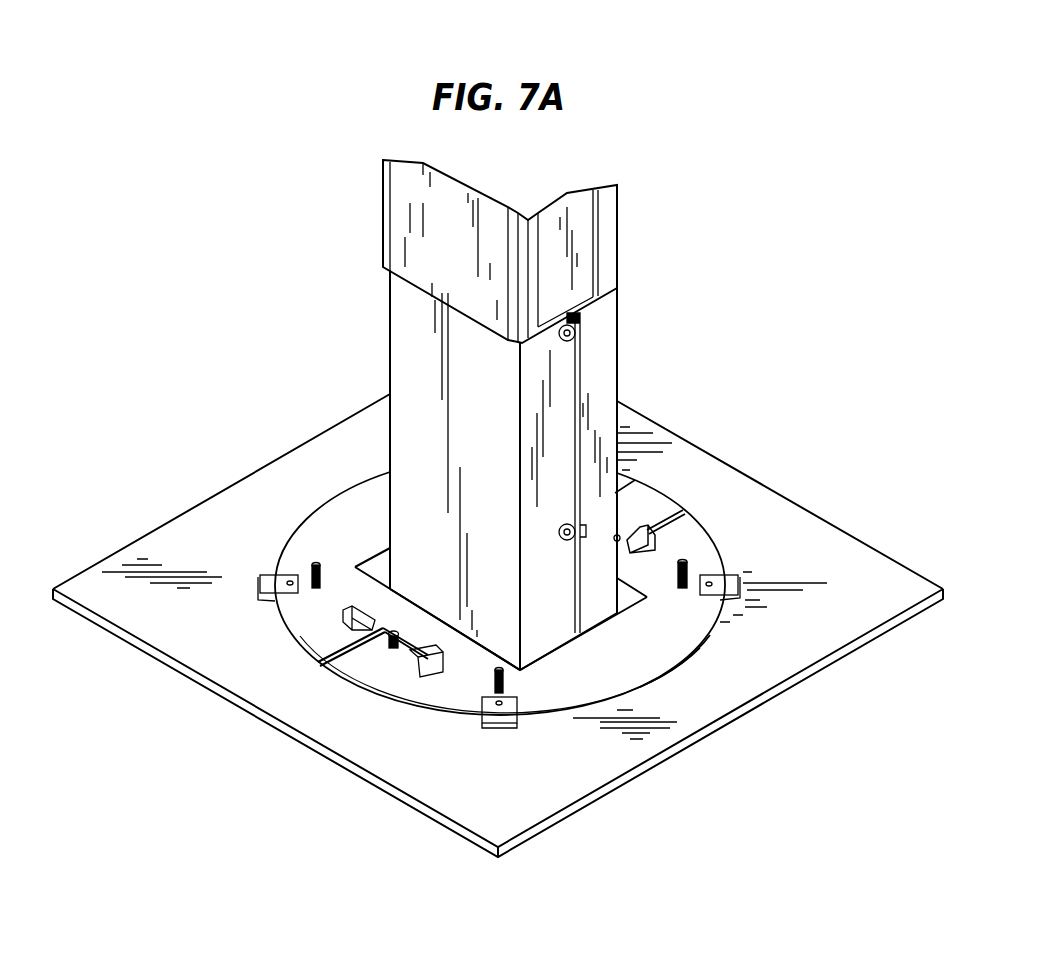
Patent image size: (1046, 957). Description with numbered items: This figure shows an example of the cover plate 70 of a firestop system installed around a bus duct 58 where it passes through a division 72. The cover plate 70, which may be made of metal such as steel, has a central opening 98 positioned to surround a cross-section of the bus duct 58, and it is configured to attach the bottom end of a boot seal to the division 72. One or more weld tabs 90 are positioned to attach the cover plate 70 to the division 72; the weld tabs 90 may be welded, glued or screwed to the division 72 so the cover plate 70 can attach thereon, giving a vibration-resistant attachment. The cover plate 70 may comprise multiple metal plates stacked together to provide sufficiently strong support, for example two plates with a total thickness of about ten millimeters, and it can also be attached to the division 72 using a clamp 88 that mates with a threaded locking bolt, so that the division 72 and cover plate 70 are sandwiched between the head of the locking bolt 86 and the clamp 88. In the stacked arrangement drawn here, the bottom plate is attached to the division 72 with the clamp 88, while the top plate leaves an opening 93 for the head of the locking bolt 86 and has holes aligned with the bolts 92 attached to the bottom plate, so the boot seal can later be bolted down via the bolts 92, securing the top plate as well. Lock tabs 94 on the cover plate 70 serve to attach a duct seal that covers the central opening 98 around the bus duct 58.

The bus duct 58 is at (600, 330).
The cover plate 70 is at (660, 660).
The division 72 is at (805, 660).
The head of the locking bolt 86 is at (378, 635).
The clamp 88 is at (397, 632).
The weld tab 90 is at (275, 578).
The bolt 92 is at (313, 563).
The opening 93 is at (650, 507).
The lock tab 94 is at (343, 620).
The central opening 98 is at (707, 640).